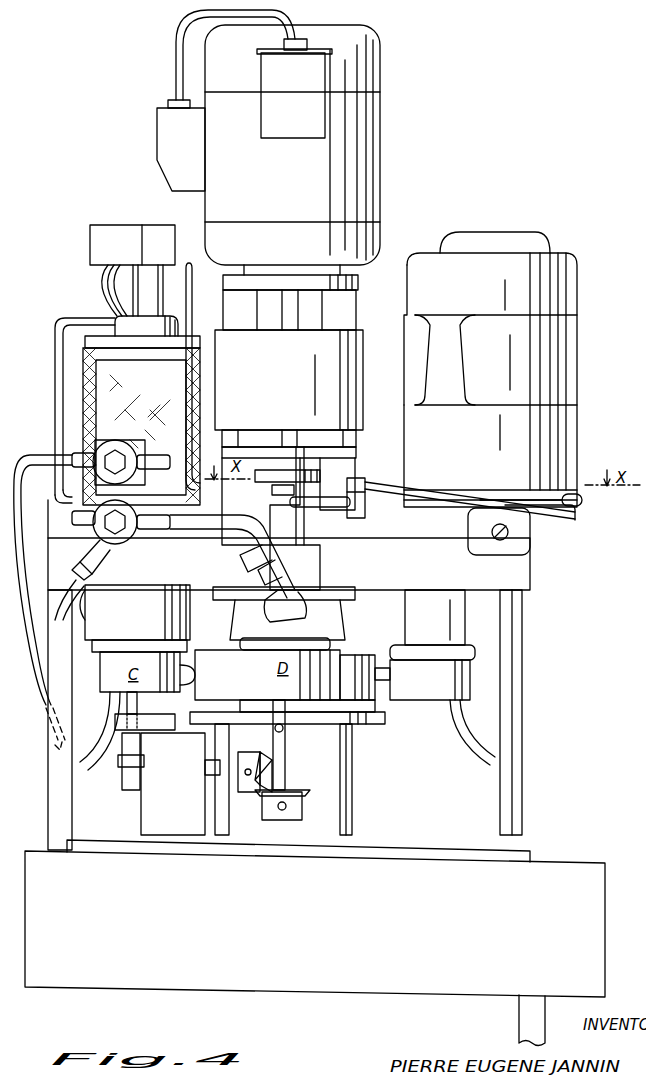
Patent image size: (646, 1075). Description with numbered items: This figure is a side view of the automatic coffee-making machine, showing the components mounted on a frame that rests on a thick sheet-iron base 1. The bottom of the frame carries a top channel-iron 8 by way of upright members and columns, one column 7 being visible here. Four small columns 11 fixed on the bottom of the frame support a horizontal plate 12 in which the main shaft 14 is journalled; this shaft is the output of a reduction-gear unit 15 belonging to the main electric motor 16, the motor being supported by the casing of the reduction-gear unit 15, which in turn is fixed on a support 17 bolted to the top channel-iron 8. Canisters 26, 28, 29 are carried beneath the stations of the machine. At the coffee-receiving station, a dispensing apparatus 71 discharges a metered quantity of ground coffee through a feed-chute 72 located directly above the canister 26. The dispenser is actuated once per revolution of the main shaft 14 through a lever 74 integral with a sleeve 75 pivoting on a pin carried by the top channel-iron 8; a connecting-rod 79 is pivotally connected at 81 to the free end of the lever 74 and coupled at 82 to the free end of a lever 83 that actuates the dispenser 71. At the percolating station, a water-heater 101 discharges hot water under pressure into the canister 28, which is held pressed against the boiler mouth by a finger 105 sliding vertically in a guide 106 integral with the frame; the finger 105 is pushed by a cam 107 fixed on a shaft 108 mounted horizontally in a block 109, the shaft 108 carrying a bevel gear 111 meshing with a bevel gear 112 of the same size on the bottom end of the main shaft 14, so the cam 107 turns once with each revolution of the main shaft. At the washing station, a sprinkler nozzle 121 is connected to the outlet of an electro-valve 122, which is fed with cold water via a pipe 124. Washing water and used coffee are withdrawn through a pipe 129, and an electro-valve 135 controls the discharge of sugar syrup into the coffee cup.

The base 1 is at (549, 855).
The column 7 is at (522, 688).
The top channel-iron 8 is at (451, 576).
The small columns 11 is at (347, 785).
The horizontal plate 12 is at (368, 726).
The main shaft 14 is at (286, 762).
The reduction-gear unit 15 is at (298, 383).
The main electric motor 16 is at (297, 187).
The support 17 is at (350, 460).
The canister 26 is at (482, 652).
The canister 28 is at (93, 671).
The canister 29 is at (333, 670).
The dispensing apparatus 71 is at (578, 395).
The feed-chute 72 is at (466, 610).
The lever 74 is at (330, 508).
The sleeve 75 is at (300, 530).
The connecting-rod 79 is at (372, 478).
The pivotal connection 81 is at (366, 505).
The pivotal coupling 82 is at (583, 508).
The lever 83 is at (548, 510).
The water-heater 101 is at (153, 381).
The finger 105 is at (138, 690).
The guide 106 is at (118, 728).
The cam 107 is at (120, 762).
The shaft 108 is at (208, 770).
The block 109 is at (150, 810).
The bevel gear 111 is at (262, 795).
The bevel gear 112 is at (300, 790).
The sprinkler head or nozzle 121 is at (262, 572).
The electro-valve 122 is at (132, 538).
The pipe 124 is at (62, 392).
The pipe 129 is at (519, 1015).
The electro-valve 135 is at (134, 482).